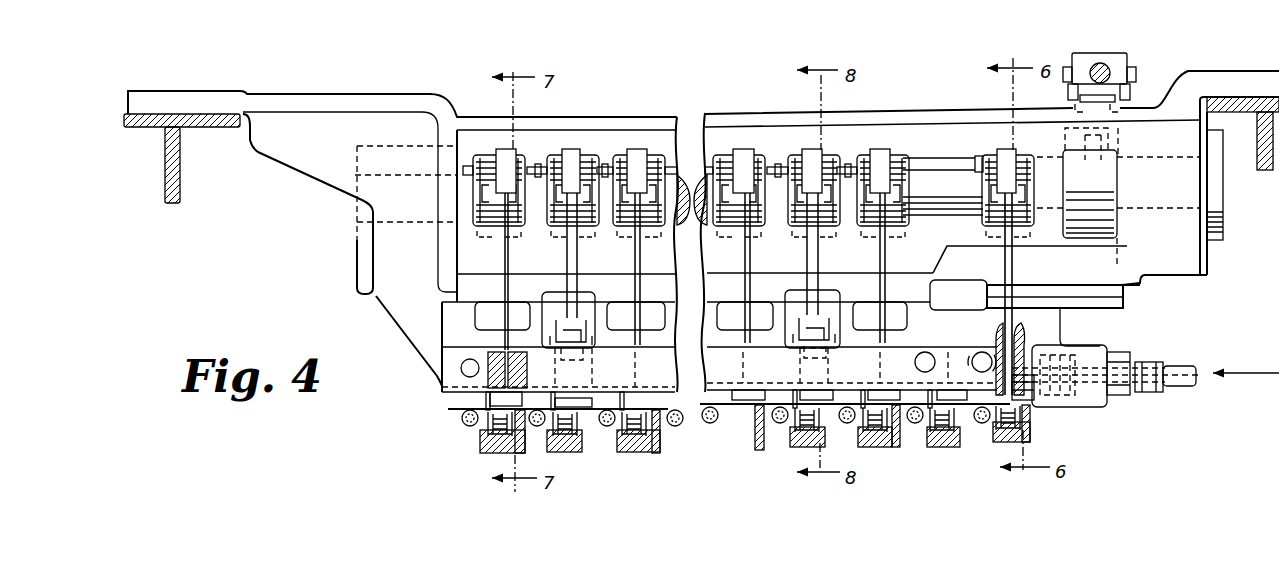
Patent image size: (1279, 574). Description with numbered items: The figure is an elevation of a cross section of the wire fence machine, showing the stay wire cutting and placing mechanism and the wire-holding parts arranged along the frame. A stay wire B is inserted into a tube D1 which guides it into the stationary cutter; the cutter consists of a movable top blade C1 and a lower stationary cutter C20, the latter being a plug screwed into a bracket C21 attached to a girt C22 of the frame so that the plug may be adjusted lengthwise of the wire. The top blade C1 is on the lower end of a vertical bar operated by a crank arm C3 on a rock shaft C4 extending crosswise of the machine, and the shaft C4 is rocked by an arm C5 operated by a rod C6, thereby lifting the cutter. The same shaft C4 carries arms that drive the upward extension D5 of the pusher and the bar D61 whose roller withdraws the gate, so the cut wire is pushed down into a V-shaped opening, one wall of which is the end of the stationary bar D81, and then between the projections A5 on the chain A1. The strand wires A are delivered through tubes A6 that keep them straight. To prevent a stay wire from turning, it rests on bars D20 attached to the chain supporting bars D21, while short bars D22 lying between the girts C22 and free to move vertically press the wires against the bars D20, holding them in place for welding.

The strand wire A is at (468, 426).
The chain A1 is at (1018, 414).
The projection A5 is at (606, 406).
The tube A6 is at (683, 424).
The stay wire B is at (1203, 375).
The movable top blade C1 is at (1010, 303).
The crank arm C3 is at (990, 157).
The rock shaft C4 is at (937, 166).
The arm C5 is at (1093, 178).
The rod C6 is at (1107, 66).
The lower stationary cutter C20 is at (1019, 408).
The bracket C21 is at (1058, 321).
The girt C22 is at (1197, 271).
The tube D1 is at (1180, 383).
The upward extension D5 is at (504, 265).
The bars D20 is at (755, 432).
The chain supporting bars D21 is at (644, 445).
The short bars D22 is at (588, 414).
The bar D61 is at (566, 258).
The stationary bar D81 is at (498, 398).